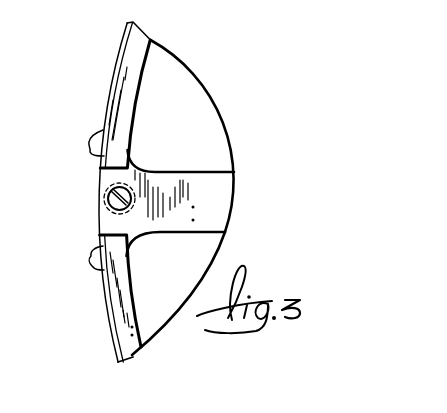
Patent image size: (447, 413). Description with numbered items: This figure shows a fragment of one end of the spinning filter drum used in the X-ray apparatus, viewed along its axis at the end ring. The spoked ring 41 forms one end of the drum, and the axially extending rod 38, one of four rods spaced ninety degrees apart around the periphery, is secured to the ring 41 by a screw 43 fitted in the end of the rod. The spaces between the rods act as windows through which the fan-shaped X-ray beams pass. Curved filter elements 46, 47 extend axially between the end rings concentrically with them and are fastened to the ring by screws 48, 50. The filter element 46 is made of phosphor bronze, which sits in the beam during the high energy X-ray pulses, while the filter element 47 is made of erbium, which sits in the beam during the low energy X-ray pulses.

The rod 38 is at (106, 179).
The spoked ring 41 is at (123, 291).
The screw 43 is at (106, 208).
The curved filter element 46 is at (107, 293).
The curved filter element 47 is at (125, 38).
The screw 48 is at (98, 133).
The screw 50 is at (88, 252).